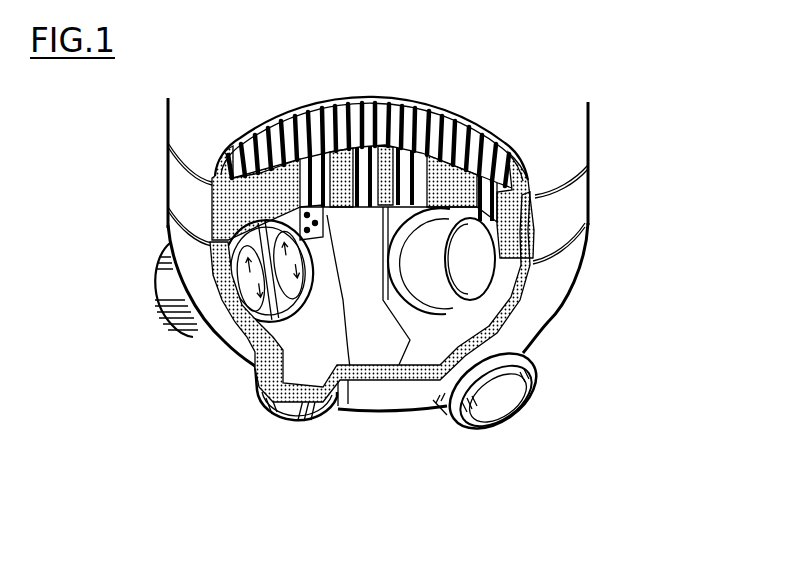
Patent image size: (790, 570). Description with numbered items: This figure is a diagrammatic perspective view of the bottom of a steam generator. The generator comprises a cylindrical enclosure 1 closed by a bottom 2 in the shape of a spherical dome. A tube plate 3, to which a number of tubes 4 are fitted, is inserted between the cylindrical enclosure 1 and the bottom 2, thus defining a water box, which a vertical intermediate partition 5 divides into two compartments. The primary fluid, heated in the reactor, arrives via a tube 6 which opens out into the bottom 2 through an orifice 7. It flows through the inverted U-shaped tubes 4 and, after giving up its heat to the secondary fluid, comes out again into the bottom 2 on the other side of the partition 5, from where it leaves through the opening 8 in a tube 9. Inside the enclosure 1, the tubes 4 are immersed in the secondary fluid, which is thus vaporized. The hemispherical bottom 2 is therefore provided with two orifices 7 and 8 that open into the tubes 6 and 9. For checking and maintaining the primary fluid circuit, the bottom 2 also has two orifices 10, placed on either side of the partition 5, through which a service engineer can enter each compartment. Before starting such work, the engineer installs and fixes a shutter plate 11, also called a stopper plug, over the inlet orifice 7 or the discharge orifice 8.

The cylindrical enclosure 1 is at (160, 115).
The bottom 2 is at (548, 278).
The tube plate 3 is at (213, 195).
The tubes 4 is at (473, 153).
The vertical intermediate partition 5 is at (355, 337).
The tube 6 is at (167, 272).
The orifice 7 is at (258, 322).
The opening 8 is at (430, 318).
The tube 9 is at (462, 280).
The orifices 10 is at (287, 415).
The shutter plate 11 is at (263, 295).